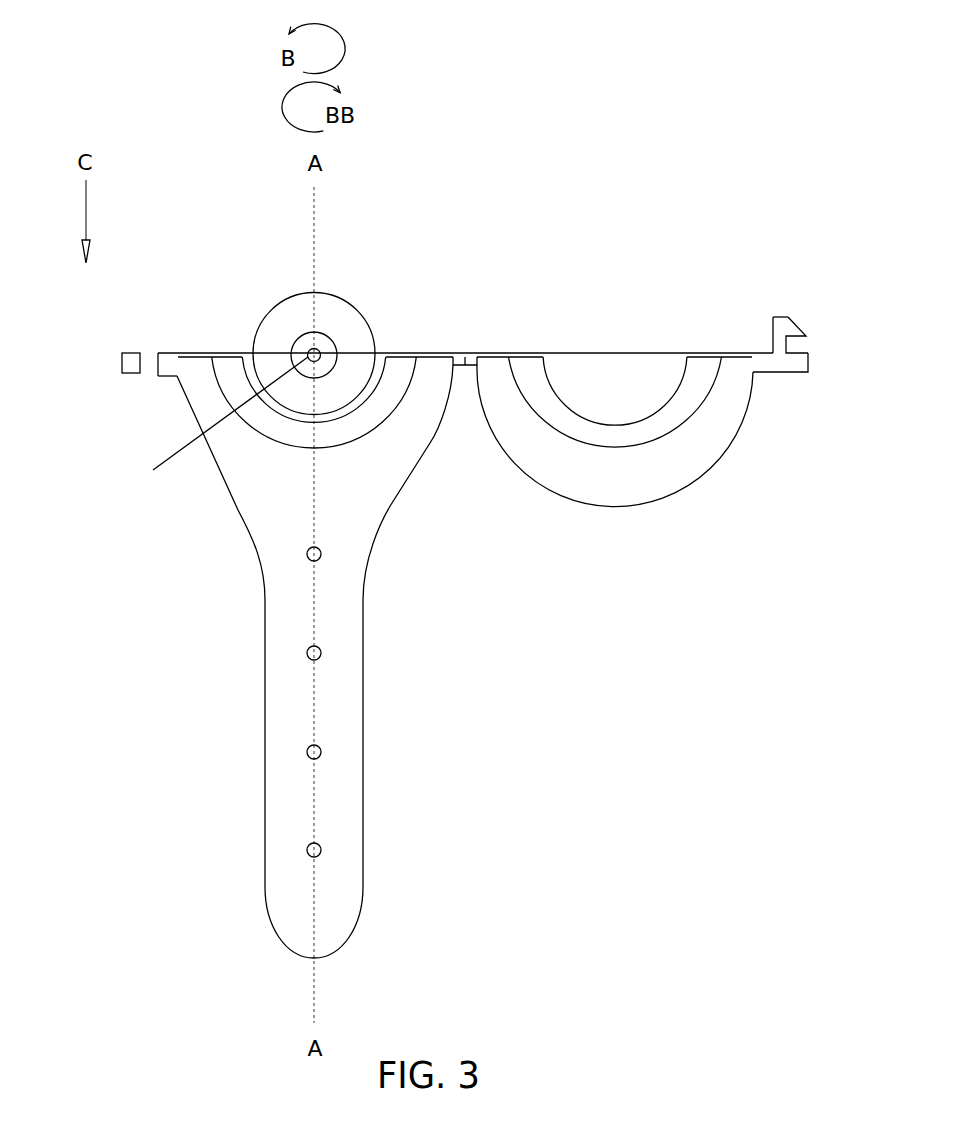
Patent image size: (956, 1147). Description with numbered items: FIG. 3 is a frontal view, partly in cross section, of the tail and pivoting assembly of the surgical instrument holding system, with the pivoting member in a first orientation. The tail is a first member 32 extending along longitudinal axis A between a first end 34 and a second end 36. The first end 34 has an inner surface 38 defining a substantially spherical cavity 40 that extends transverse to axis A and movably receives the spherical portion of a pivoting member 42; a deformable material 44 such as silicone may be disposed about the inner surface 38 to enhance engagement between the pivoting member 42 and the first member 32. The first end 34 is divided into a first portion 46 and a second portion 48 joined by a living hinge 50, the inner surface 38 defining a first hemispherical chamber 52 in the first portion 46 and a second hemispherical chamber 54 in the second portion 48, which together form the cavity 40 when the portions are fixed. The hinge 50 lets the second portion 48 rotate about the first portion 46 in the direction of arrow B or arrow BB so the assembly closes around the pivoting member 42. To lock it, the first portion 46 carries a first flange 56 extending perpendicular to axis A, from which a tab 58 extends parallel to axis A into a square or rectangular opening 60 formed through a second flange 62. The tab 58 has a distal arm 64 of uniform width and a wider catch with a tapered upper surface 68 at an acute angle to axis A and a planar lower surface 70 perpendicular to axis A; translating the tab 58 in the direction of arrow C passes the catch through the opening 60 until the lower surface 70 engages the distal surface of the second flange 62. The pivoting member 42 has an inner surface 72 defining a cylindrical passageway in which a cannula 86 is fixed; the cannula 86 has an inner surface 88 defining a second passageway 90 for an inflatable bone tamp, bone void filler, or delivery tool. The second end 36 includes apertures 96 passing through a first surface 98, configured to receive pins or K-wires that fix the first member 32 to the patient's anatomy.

The first member 32 is at (294, 661).
The first end 34 is at (192, 405).
The second end 36 is at (337, 937).
The inner surface 38 is at (417, 352).
The cavity 40 is at (381, 368).
The pivoting member 42 is at (248, 285).
The material 44 is at (225, 355).
The first portion 46 is at (227, 457).
The second portion 48 is at (695, 463).
The living hinge 50 is at (471, 373).
The first hemispherical chamber 52 is at (212, 358).
The second hemispherical chamber 54 is at (532, 380).
The first flange 56 is at (797, 372).
The tab 58 is at (788, 292).
The opening 60 is at (136, 388).
The second flange 62 is at (120, 362).
The arm 64 is at (773, 340).
The tapered upper surface 68 is at (788, 317).
The planar lower surface 70 is at (807, 337).
The inner surface 72 is at (308, 333).
The cannula 86 is at (327, 335).
The inner surface 88 is at (216, 428).
The second passageway 90 is at (322, 352).
The aperture 96 is at (322, 558).
The first surface 98 is at (362, 682).